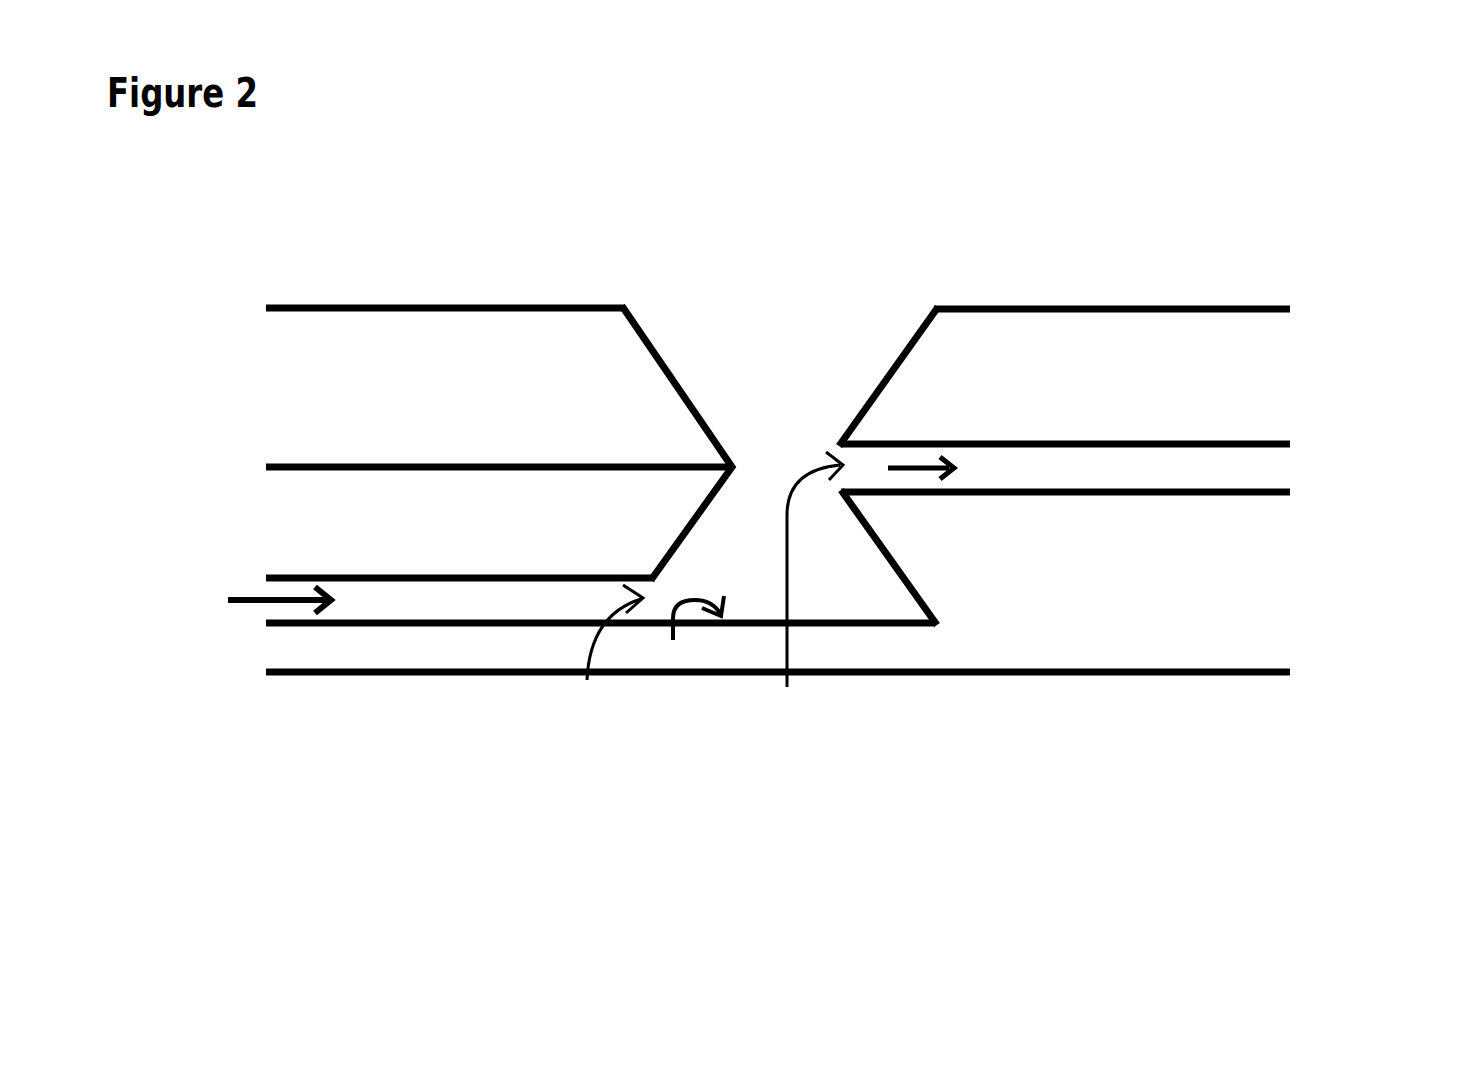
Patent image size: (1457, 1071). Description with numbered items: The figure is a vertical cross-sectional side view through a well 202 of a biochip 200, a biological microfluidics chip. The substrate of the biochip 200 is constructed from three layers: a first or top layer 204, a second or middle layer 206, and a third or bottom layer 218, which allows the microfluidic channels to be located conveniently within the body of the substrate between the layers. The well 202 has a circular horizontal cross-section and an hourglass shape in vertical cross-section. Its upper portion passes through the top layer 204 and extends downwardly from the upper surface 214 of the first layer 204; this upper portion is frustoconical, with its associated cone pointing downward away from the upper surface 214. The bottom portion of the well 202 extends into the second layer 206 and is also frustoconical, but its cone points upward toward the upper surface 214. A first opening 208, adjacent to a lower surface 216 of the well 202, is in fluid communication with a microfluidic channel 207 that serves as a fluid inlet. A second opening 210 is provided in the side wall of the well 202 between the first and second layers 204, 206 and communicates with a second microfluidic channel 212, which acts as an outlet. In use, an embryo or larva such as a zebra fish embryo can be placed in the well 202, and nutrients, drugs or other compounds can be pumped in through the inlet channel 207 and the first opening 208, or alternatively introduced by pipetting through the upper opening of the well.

The biochip 200 is at (1033, 195).
The well 202 is at (786, 348).
The first/top layer 204 is at (360, 400).
The second/middle layer 206 is at (360, 538).
The microfluidic channel 207 is at (372, 642).
The first opening 208 is at (587, 680).
The second opening 210 is at (787, 687).
The second microfluidic channel 212 is at (1065, 468).
The upper surface 214 is at (1087, 290).
The lower surface 216 is at (673, 640).
The third/bottom layer 218 is at (499, 662).